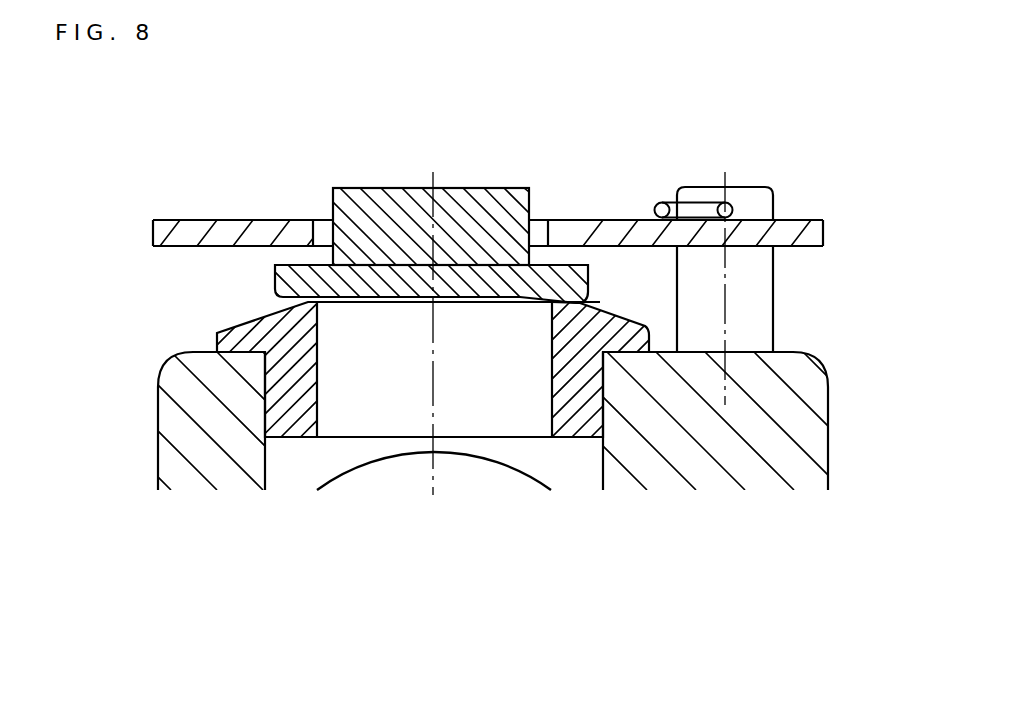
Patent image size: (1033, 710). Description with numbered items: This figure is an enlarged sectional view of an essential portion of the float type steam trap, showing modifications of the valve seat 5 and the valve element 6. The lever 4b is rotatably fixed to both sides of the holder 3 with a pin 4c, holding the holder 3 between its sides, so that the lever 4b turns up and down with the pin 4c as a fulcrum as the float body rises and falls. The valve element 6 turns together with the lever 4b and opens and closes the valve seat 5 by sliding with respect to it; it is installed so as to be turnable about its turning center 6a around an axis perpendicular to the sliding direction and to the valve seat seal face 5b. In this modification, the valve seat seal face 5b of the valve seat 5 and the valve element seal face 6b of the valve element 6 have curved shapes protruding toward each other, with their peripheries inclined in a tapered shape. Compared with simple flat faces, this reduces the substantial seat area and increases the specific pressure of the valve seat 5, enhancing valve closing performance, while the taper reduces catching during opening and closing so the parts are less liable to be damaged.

The holder 3 is at (797, 403).
The lever 4b is at (230, 220).
The pin 4c is at (762, 277).
The valve seat 5 is at (250, 336).
The valve seat seal face 5b is at (385, 303).
The valve element 6 is at (506, 194).
The turning center 6a is at (433, 187).
The valve element seal face 6b is at (557, 303).